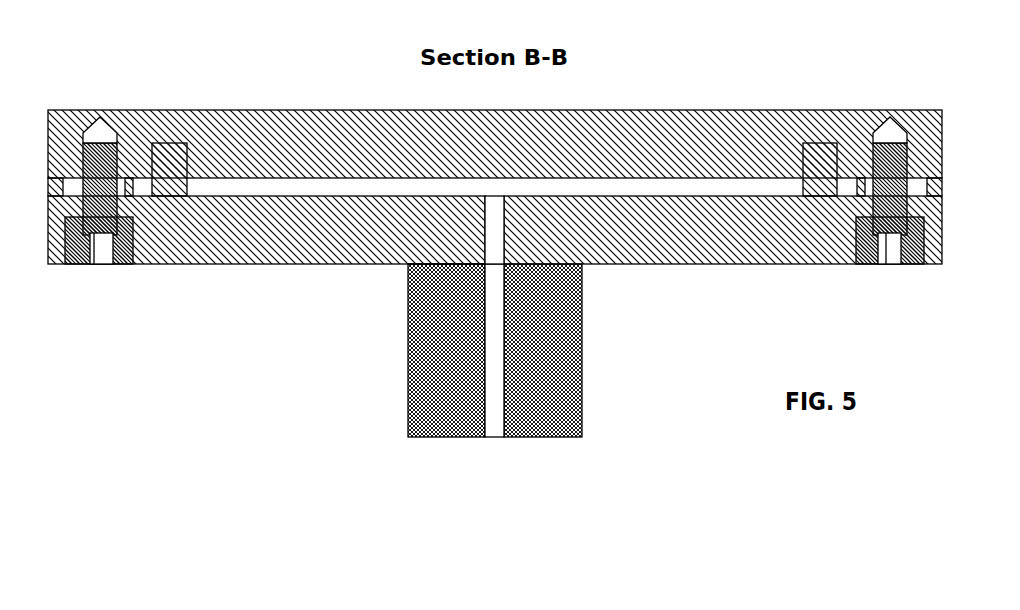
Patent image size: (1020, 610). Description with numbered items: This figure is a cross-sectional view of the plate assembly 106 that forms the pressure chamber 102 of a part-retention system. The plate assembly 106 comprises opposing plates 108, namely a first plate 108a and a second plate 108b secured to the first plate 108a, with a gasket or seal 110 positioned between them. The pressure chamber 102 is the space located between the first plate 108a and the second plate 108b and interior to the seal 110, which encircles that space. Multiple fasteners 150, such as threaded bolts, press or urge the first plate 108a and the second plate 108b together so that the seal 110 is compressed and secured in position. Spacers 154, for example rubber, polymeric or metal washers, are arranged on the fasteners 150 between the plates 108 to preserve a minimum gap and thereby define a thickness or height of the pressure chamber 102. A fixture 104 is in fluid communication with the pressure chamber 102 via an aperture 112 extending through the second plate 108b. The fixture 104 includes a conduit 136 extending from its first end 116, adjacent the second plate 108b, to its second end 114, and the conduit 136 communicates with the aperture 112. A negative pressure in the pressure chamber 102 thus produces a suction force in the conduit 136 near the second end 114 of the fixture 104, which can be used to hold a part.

The pressure chamber 102 is at (655, 200).
The fixture 104 is at (513, 377).
The plate assembly 106 is at (487, 262).
The plates 108 is at (495, 198).
The first plate 108a is at (307, 118).
The second plate 108b is at (318, 255).
The seal 110 is at (168, 183).
The aperture 112 is at (508, 236).
The second end 114 is at (447, 444).
The first end 116 is at (430, 258).
The conduit 136 is at (508, 295).
The fasteners 150 is at (93, 264).
The spacers 154 is at (478, 191).